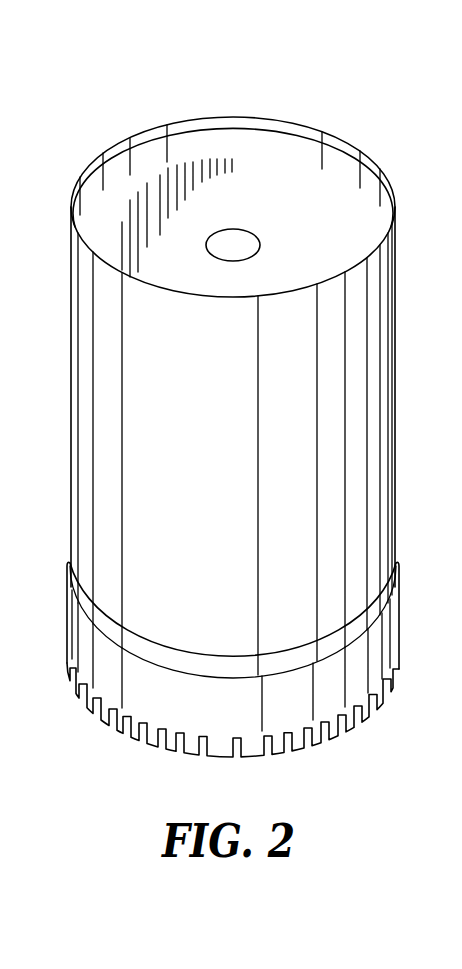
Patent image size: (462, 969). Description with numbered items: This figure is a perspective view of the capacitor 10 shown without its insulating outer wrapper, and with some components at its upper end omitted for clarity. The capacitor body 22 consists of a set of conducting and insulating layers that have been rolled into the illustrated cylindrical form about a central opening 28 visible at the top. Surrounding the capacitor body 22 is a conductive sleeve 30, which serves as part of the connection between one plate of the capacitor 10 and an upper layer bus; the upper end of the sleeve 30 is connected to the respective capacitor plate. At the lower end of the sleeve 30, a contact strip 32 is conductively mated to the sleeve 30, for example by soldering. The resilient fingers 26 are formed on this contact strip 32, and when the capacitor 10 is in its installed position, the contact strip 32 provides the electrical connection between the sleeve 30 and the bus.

The capacitor 10 is at (110, 95).
The capacitor body 22 is at (307, 260).
The resilient fingers 26 is at (315, 745).
The central opening 28 is at (233, 247).
The conductive sleeve 30 is at (395, 342).
The contact strip 32 is at (402, 632).